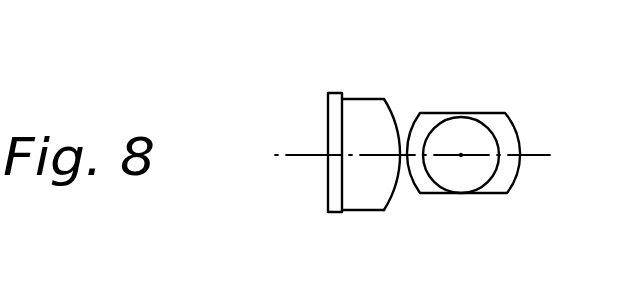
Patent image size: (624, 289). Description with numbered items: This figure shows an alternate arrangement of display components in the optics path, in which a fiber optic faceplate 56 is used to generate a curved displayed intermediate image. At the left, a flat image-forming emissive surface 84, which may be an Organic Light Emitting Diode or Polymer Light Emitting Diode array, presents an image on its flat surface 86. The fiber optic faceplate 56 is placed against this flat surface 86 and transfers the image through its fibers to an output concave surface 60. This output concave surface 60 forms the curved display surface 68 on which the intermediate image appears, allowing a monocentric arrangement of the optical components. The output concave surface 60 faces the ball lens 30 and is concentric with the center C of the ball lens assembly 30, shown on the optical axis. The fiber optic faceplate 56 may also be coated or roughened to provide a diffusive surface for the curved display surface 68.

The flat image-forming emissive surface 84 is at (327, 126).
The flat surface 86 is at (346, 113).
The fiber optic faceplate 56 is at (350, 212).
The output concave surface 60 is at (387, 203).
The curved display surface 68 is at (388, 118).
The ball lens 30 is at (517, 130).
The center of ball lens assembly C is at (461, 155).